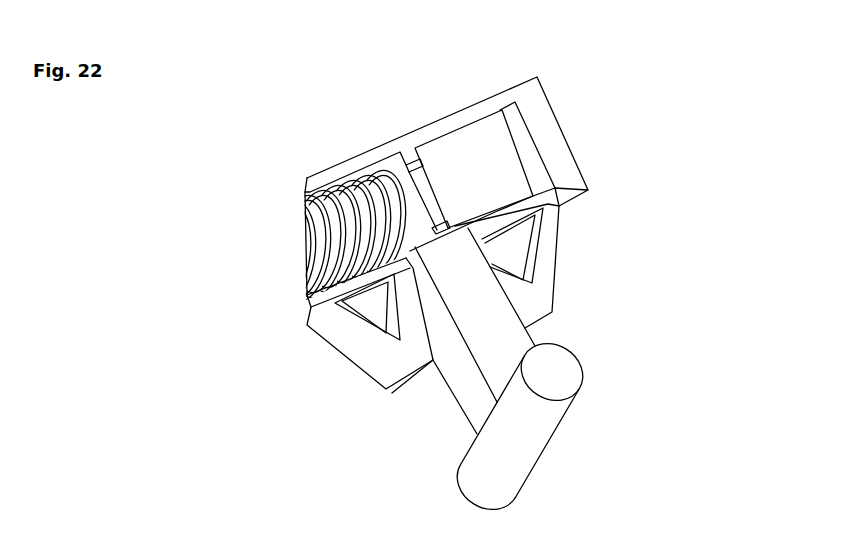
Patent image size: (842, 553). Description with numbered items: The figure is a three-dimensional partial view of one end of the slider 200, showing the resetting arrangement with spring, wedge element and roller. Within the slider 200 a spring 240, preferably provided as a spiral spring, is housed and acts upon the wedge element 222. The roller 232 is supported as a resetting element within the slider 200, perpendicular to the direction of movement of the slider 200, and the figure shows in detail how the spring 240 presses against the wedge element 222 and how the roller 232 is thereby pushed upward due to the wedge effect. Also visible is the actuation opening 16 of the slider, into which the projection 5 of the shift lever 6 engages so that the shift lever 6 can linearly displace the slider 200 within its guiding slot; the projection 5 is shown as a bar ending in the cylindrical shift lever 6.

The slider 200 is at (548, 138).
The actuation opening 16 is at (426, 328).
The spring 240 is at (353, 203).
The wedge element 222 is at (414, 192).
The roller 232 is at (468, 135).
The projection 5 is at (510, 338).
The shift lever 6 is at (553, 415).